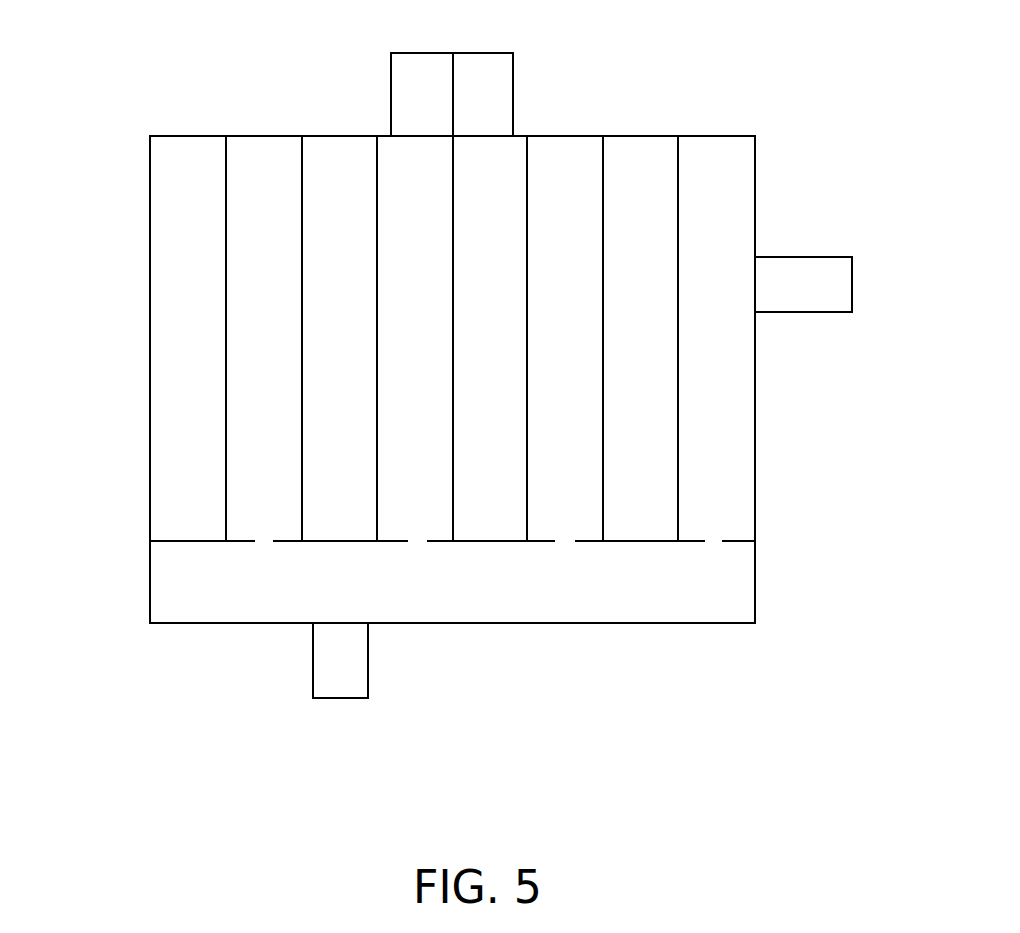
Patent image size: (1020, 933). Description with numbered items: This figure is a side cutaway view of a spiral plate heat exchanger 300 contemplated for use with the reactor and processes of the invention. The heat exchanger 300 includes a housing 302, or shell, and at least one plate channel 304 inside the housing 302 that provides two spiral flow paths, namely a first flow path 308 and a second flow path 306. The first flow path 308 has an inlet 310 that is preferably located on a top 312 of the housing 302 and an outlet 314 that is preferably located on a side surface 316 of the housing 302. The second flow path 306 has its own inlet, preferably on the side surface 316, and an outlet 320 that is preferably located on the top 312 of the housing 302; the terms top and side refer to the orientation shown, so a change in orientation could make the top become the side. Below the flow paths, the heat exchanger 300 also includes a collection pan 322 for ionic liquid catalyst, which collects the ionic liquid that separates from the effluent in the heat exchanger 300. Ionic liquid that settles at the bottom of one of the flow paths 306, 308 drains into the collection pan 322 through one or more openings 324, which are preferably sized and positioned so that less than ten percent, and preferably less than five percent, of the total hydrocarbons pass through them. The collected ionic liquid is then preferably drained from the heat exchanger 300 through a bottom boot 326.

The spiral plate heat exchanger 300 is at (708, 79).
The housing 302 is at (150, 497).
The plate channel 304 is at (302, 160).
The second flow path 306 is at (504, 162).
The first flow path 308 is at (388, 162).
The inlet 310 is at (422, 50).
The top 312 is at (252, 136).
The outlet 314 is at (805, 268).
The side surface 316 is at (150, 293).
The outlet 320 is at (483, 52).
The collection pan 322 is at (157, 585).
The openings 324 is at (265, 548).
The bottom boot 326 is at (313, 693).